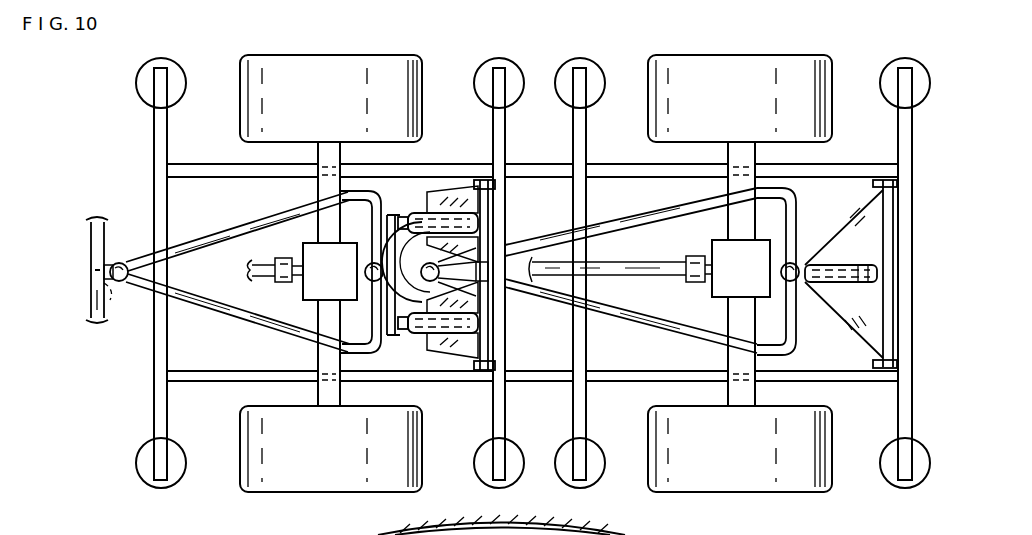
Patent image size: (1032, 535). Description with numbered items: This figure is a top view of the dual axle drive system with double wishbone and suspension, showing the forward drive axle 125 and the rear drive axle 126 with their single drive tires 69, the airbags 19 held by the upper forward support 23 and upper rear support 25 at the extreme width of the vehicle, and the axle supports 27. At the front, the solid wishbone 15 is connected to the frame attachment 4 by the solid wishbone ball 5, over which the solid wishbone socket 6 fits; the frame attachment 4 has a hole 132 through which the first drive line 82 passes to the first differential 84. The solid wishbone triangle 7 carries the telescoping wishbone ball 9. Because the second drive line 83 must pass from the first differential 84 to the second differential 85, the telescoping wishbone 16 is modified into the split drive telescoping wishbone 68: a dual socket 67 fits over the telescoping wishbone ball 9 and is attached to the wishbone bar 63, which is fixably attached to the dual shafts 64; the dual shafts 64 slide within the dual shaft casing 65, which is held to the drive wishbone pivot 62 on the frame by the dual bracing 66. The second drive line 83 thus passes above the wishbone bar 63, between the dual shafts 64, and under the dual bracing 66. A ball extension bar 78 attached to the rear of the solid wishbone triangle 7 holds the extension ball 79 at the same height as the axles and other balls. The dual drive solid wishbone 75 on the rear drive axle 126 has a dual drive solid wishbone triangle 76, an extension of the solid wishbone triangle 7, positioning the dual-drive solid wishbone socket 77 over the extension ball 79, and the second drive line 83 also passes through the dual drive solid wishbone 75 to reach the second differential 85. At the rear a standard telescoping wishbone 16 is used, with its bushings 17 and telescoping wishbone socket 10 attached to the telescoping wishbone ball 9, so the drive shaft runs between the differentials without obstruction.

The frame attachment 4 is at (90, 235).
The solid wishbone ball 5 is at (112, 262).
The solid wishbone socket 6 is at (126, 265).
The solid wishbone triangle 7 is at (232, 220).
The telescoping wishbone ball 9 is at (368, 262).
The telescoping wishbone socket 10 is at (797, 286).
The solid wishbone 15 is at (217, 312).
The telescoping wishbone 16 is at (832, 224).
The bushings 17 is at (492, 184).
The airbags 19 is at (184, 70).
The upper forward support 23 is at (154, 410).
The upper rear support 25 is at (505, 415).
The axle supports 27 is at (210, 164).
The drive wishbone pivot 62 is at (465, 192).
The wishbone bar 63 is at (385, 340).
The dual shafts 64 is at (404, 213).
The dual shaft casing 65 is at (436, 200).
The dual bracing 66 is at (455, 220).
The dual socket 67 is at (376, 205).
The split drive telescoping wishbone 68 is at (442, 362).
The single drive tires 69 is at (372, 72).
The dual drive solid wishbone 75 is at (617, 320).
The dual drive solid wishbone triangle 76 is at (646, 222).
The dual-drive solid wishbone socket 77 is at (490, 300).
The ball extension bar 78 is at (372, 292).
The extension ball 79 is at (490, 246).
The first drive line 82 is at (248, 270).
The second drive line 83 is at (662, 264).
The first differential 84 is at (330, 271).
The second differential 85 is at (741, 268).
The forward drive axle 125 is at (318, 356).
The rear drive axle 126 is at (728, 358).
The hole 132 is at (104, 283).